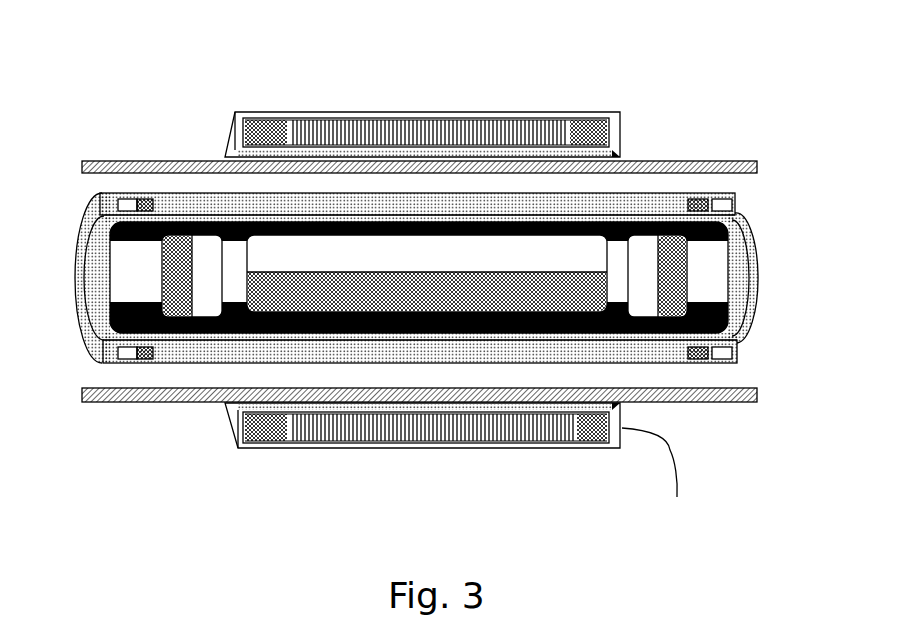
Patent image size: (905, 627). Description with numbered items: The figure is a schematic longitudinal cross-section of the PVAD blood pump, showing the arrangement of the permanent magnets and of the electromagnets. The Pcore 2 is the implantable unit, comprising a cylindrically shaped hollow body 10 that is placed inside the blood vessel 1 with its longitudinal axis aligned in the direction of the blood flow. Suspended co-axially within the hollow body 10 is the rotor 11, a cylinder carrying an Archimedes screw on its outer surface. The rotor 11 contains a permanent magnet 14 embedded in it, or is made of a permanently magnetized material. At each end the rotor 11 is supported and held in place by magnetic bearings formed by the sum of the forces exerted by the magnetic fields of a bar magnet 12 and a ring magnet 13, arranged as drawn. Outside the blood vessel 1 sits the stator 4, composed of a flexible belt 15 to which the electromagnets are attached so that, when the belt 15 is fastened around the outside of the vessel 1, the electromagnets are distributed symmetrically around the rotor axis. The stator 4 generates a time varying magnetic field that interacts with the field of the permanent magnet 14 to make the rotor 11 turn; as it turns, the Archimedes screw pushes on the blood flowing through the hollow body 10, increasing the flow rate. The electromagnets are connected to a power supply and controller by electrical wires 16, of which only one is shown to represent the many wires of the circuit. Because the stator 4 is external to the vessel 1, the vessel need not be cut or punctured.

The blood vessel 1 is at (730, 163).
The Pcore 2 is at (772, 228).
The stator 4 is at (445, 92).
The hollow body 10 is at (82, 262).
The rotor 11 is at (123, 288).
The bar magnet 12 is at (163, 297).
The ring magnet 13 is at (137, 192).
The permanent magnet 14 is at (353, 260).
The flexible belt 15 is at (235, 113).
The electrical wires 16 is at (662, 448).